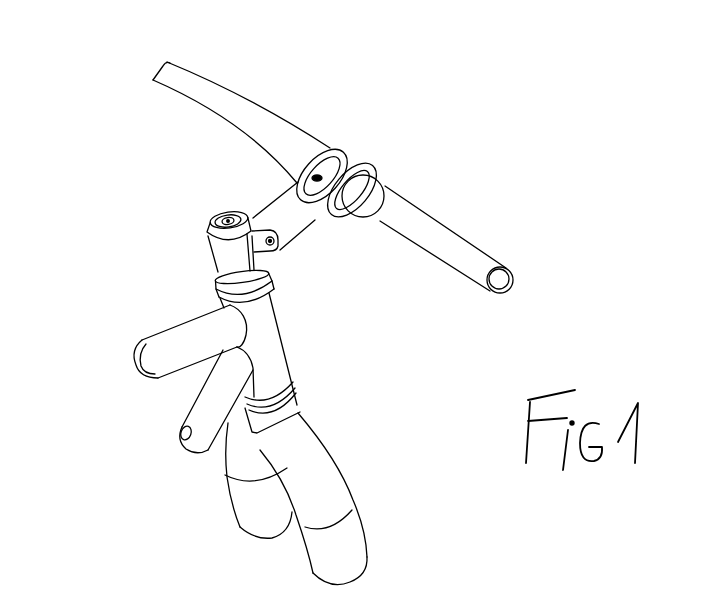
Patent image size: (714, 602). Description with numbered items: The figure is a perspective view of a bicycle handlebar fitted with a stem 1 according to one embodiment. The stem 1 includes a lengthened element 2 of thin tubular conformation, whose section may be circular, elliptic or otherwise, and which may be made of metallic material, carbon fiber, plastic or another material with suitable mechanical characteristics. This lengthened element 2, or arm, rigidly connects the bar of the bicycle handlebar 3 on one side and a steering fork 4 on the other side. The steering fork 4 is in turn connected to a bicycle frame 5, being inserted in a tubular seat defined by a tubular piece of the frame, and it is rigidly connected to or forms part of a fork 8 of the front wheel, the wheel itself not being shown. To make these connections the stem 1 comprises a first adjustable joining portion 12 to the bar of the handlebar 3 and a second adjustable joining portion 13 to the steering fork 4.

The stem 1 is at (82, 66).
The lengthened element 2 is at (295, 215).
The bicycle handlebar 3 is at (433, 233).
The steering fork 4 is at (230, 262).
The bicycle frame 5 is at (39, 503).
The fork 8 is at (322, 473).
The first adjustable joining portion 12 is at (347, 150).
The second adjustable joining portion 13 is at (202, 226).